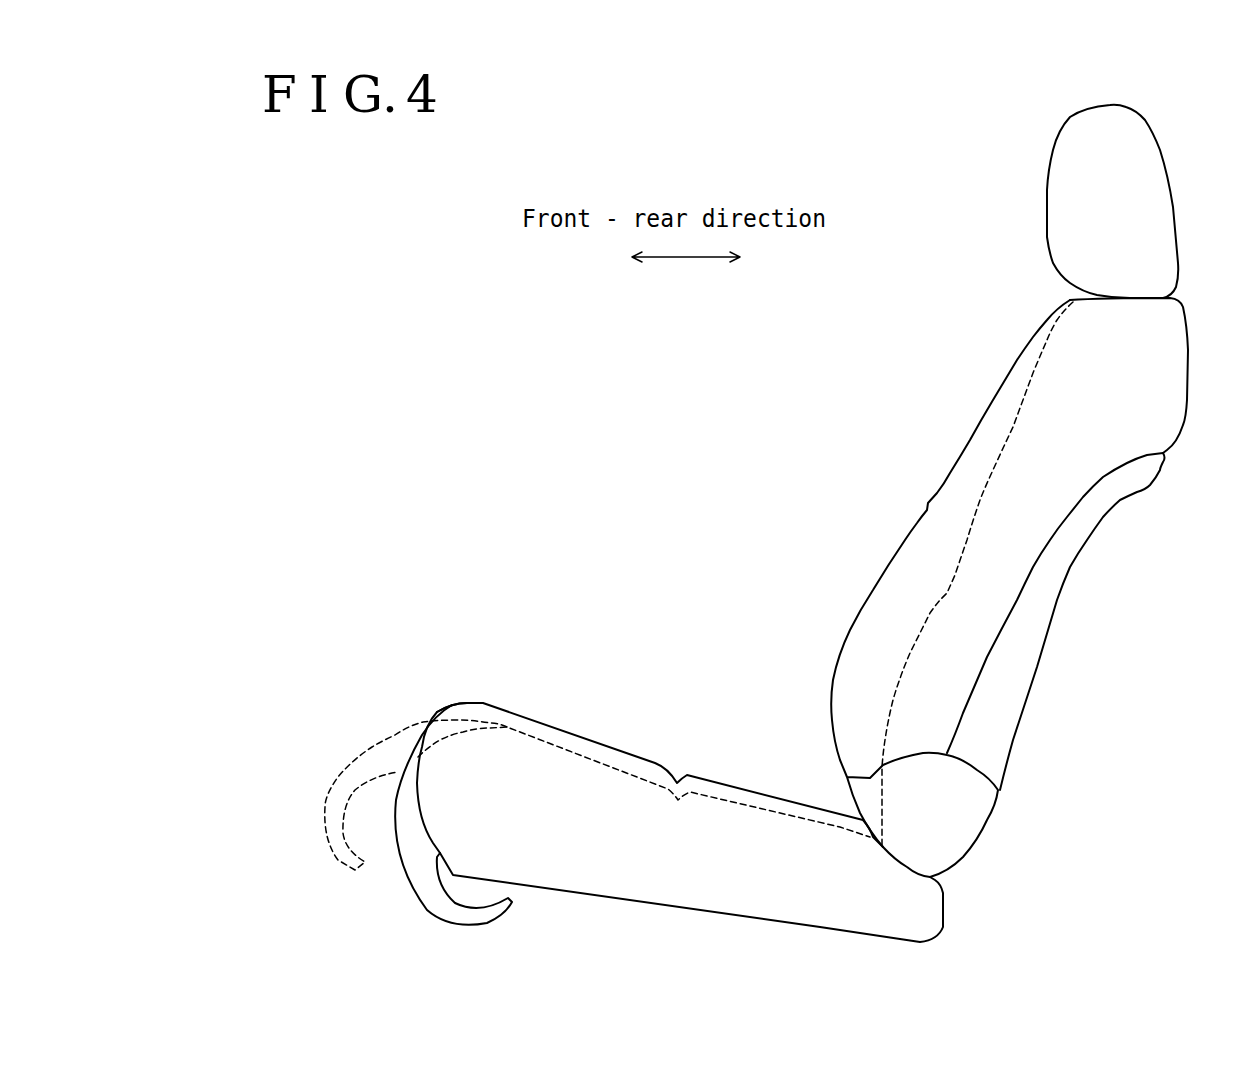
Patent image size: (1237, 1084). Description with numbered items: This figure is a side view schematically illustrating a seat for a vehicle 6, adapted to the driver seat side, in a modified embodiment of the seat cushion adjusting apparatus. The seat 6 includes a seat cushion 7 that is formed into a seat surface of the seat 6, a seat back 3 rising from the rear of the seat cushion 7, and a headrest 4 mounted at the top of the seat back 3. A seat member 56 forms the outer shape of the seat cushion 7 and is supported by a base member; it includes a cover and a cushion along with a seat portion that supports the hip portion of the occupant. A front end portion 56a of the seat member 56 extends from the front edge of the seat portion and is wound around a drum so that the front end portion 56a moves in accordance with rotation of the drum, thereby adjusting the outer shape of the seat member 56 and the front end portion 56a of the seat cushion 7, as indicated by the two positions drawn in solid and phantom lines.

The seat back 3 is at (903, 565).
The headrest 4 is at (1050, 222).
The seat for a vehicle 6 is at (872, 452).
The seat cushion 7 is at (648, 764).
The seat member 56 is at (524, 716).
The front end portion 56a is at (332, 770).